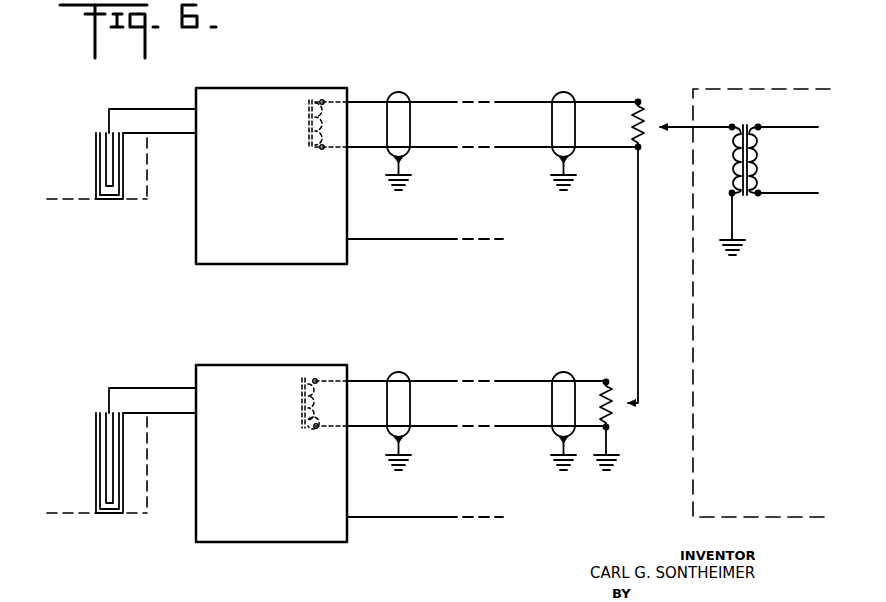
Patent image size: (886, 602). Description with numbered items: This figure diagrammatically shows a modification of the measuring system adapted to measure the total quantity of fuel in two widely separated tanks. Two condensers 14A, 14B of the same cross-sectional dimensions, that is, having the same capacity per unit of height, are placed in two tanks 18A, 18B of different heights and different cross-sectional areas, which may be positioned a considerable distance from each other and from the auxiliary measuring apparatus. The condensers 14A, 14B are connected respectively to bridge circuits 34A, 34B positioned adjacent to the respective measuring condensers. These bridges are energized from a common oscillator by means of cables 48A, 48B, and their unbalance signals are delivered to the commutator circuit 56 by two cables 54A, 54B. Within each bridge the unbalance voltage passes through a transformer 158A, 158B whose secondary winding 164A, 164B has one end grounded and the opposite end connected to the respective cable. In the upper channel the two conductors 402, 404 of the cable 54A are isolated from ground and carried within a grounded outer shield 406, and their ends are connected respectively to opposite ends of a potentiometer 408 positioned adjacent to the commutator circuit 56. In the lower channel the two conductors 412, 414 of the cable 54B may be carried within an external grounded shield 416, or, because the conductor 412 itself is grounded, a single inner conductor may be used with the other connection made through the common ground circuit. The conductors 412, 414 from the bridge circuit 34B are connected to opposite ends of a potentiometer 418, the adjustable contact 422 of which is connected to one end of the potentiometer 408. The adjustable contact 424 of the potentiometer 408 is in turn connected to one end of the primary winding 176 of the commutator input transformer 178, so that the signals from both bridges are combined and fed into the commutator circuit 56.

The condenser 14A is at (96, 160).
The tank 18A is at (50, 200).
The bridge circuit 34A is at (194, 212).
The secondary winding 164A is at (332, 98).
The transformer 158A is at (309, 150).
The conductor 402 is at (425, 102).
The conductor 404 is at (421, 147).
The grounded outer shield 406 is at (398, 92).
The cable 54A is at (548, 66).
The cable 48A is at (391, 240).
The adjustable contact 424 is at (651, 126).
The potentiometer 408 is at (631, 138).
The commutator circuit 56 is at (749, 84).
The primary winding 176 is at (723, 158).
The commutator input transformer 178 is at (748, 196).
The condenser 14B is at (96, 455).
The tank 18B is at (67, 515).
The bridge circuit 34B is at (194, 512).
The transformer 158B is at (302, 412).
The secondary winding 164B is at (327, 432).
The conductor 414 is at (425, 381).
The conductor 412 is at (423, 427).
The external grounded shield 416 is at (398, 372).
The cable 54B is at (543, 344).
The potentiometer 418 is at (620, 373).
The adjustable contact 422 is at (619, 406).
The cable 48B is at (395, 519).